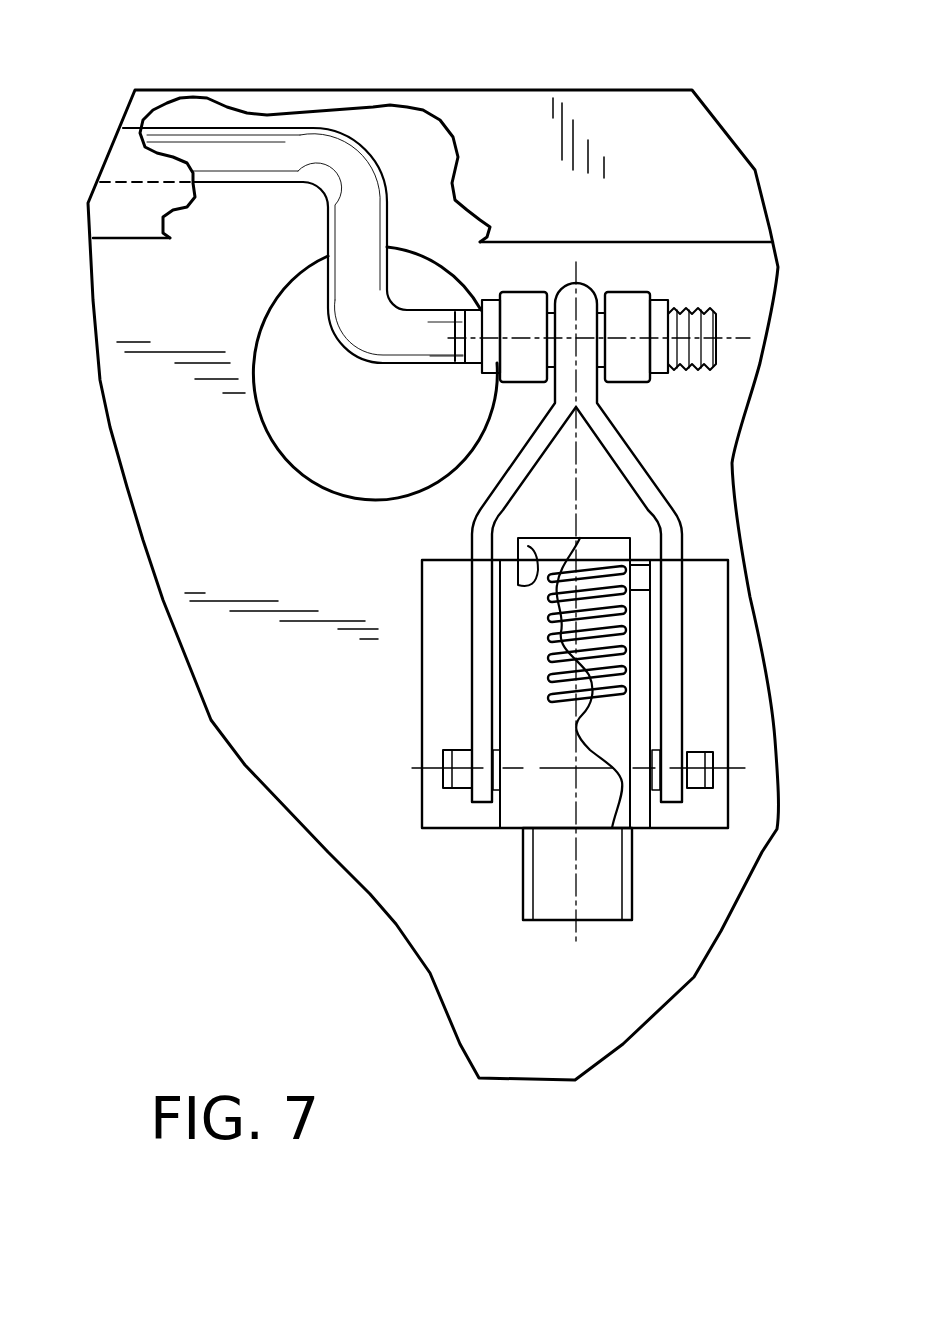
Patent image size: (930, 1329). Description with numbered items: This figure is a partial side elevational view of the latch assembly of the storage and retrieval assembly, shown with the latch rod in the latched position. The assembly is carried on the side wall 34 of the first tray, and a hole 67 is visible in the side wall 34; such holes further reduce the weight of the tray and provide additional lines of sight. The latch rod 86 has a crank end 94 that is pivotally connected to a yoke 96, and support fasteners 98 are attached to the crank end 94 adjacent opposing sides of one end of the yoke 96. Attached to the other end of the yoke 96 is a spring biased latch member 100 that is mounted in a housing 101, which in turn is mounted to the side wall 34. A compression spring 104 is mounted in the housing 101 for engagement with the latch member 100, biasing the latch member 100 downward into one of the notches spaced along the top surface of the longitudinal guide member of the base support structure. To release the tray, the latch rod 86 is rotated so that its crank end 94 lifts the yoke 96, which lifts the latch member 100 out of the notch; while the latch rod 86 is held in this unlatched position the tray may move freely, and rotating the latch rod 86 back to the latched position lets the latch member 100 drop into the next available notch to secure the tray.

The side wall 34 is at (202, 652).
The latch rod 86 is at (177, 138).
The crank end 94 is at (347, 218).
The holes 67 is at (327, 411).
The support fasteners 98 is at (517, 300).
The yoke 96 is at (650, 468).
The housing 101 is at (440, 700).
The compression spring 104 is at (620, 608).
The latch member 100 is at (604, 893).